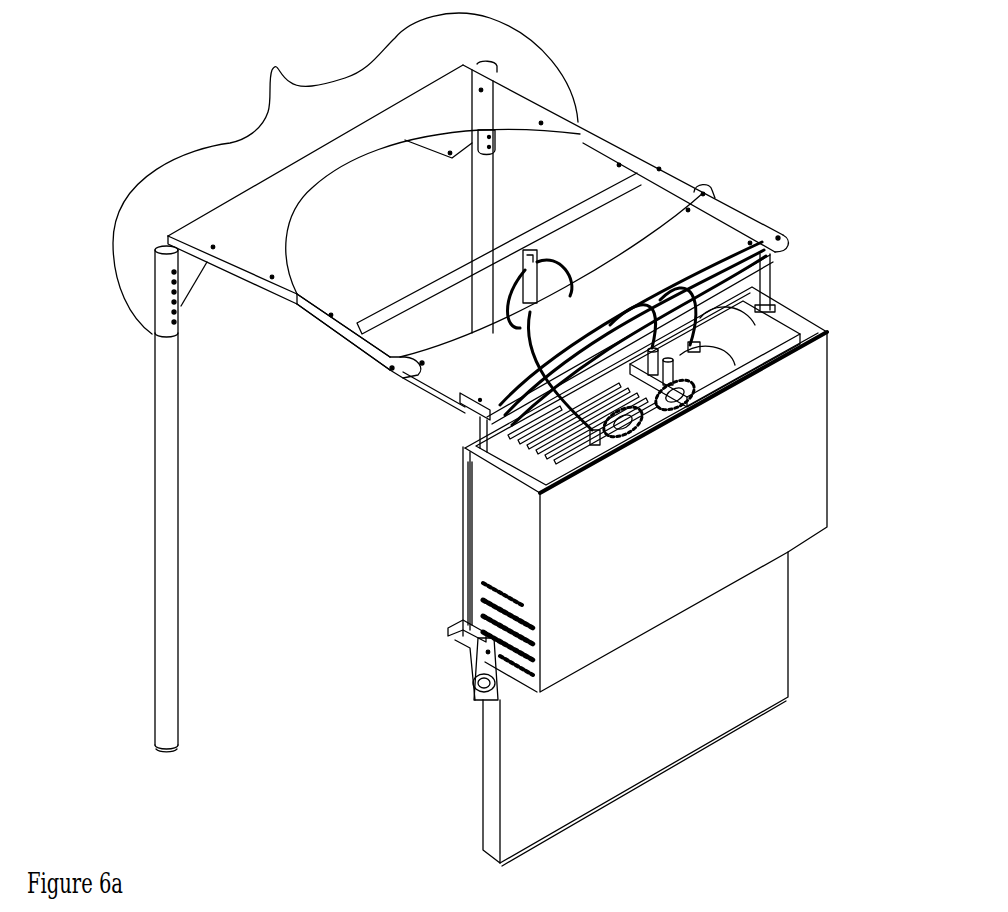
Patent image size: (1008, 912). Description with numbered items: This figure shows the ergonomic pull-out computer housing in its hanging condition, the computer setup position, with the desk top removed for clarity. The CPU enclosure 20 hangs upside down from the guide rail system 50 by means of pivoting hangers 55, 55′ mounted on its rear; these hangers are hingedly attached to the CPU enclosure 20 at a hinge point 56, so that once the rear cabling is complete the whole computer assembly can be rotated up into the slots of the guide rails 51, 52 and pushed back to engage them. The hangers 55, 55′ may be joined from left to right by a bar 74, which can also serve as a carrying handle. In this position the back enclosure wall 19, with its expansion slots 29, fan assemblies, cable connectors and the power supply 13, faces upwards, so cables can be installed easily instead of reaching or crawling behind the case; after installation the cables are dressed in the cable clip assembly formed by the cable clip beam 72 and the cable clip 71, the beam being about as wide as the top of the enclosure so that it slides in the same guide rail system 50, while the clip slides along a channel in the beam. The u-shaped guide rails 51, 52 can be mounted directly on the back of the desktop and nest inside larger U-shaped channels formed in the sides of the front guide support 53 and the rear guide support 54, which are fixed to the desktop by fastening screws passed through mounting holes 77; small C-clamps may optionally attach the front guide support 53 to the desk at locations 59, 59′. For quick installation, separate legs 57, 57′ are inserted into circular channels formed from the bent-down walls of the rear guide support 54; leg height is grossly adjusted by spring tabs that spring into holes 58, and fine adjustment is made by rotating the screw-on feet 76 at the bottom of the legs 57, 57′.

The guide rail system 50 is at (614, 98).
The rear guide support 54 is at (345, 173).
The leg 57 is at (164, 364).
The leg 57′ is at (480, 197).
The holes 58 is at (180, 322).
The screw-on feet 76 is at (165, 750).
The guide rail 51 is at (323, 313).
The guide rail 52 is at (608, 147).
The front guide support 53 is at (710, 205).
The location 59 is at (462, 394).
The location 59′ is at (783, 228).
The mounting holes 77 is at (422, 366).
The cable clip beam 72 is at (563, 212).
The cable clip 71 is at (540, 252).
The pivoting hanger 55 is at (476, 450).
The pivoting hanger 55′ is at (770, 283).
The bar 74 is at (766, 268).
The CPU enclosure 20 is at (455, 588).
The expansion slots 29 is at (522, 447).
The hinge point 56 is at (500, 460).
The power supply 13 is at (772, 350).
The back enclosure wall 19 is at (748, 375).